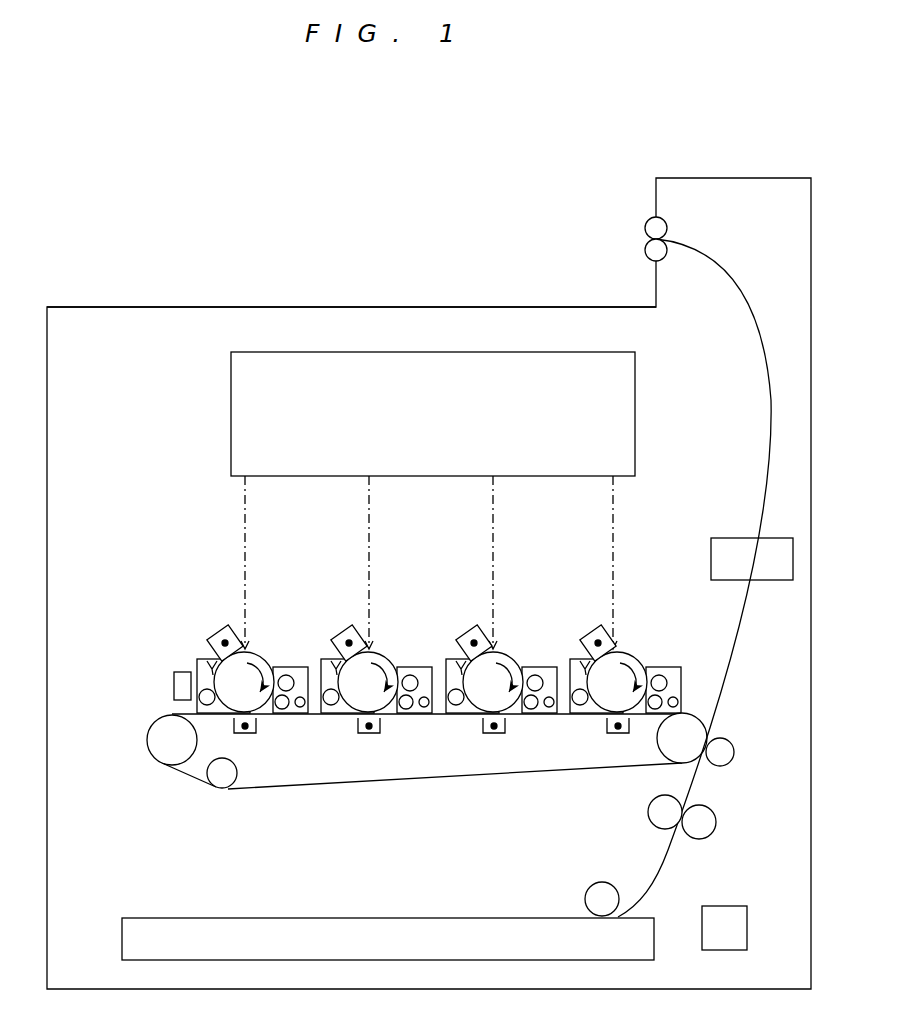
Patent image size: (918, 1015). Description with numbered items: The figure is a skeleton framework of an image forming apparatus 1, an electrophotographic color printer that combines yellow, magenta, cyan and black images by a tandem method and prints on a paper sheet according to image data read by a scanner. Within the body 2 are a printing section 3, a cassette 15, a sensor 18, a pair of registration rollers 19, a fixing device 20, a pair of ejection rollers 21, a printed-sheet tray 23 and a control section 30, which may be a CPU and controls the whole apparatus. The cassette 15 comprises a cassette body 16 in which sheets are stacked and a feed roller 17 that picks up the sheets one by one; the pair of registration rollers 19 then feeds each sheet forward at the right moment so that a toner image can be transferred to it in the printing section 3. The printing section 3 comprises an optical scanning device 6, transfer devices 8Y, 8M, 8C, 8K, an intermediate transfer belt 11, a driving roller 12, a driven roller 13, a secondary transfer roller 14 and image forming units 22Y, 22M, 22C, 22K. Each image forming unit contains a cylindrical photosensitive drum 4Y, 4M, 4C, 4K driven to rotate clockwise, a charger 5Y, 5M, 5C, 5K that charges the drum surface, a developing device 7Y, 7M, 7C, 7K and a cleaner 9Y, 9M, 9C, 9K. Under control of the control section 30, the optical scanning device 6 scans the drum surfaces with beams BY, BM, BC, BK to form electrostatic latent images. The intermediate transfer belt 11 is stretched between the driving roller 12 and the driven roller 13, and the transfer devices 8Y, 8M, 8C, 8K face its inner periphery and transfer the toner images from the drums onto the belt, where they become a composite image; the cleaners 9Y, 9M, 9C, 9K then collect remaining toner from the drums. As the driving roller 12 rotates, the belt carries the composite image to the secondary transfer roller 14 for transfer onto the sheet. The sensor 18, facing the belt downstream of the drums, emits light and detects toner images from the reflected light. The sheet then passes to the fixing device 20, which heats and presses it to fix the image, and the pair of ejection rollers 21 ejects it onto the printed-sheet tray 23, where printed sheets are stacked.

The image forming apparatus 1 is at (55, 179).
The body 2 is at (159, 303).
The printing section 3 is at (176, 535).
The optical scanning device 6 is at (636, 405).
The printed-sheet tray 23 is at (475, 307).
The pair of ejection rollers 21 is at (681, 223).
The fixing device 20 is at (793, 560).
The driving roller 12 is at (690, 732).
The driven roller 13 is at (172, 745).
The secondary transfer roller 14 is at (720, 752).
The intermediate transfer belt 11 is at (462, 781).
The sensor 18 is at (174, 686).
The pair of registration rollers 19 is at (718, 827).
The cassette 15 is at (570, 884).
The cassette body 16 is at (455, 917).
The feed roller 17 is at (610, 888).
The control section 30 is at (747, 928).
The photosensitive drum 4K is at (263, 655).
The photosensitive drum 4C is at (387, 655).
The photosensitive drum 4M is at (512, 655).
The photosensitive drum 4Y is at (636, 655).
The charger 5K is at (223, 633).
The charger 5C is at (347, 633).
The charger 5M is at (472, 633).
The charger 5Y is at (596, 633).
The developing device 7K is at (292, 713).
The developing device 7C is at (416, 713).
The developing device 7M is at (541, 713).
The developing device 7Y is at (681, 672).
The transfer device 8K is at (251, 733).
The transfer device 8C is at (380, 733).
The transfer device 8M is at (505, 733).
The transfer device 8Y is at (608, 733).
The cleaner 9K is at (215, 713).
The cleaner 9C is at (343, 713).
The cleaner 9M is at (463, 713).
The cleaner 9Y is at (587, 713).
The image forming unit 22K is at (261, 643).
The image forming unit 22C is at (385, 643).
The image forming unit 22M is at (510, 643).
The image forming unit 22Y is at (634, 643).
The beam BK is at (247, 535).
The beam BC is at (371, 535).
The beam BM is at (495, 535).
The beam BY is at (615, 535).